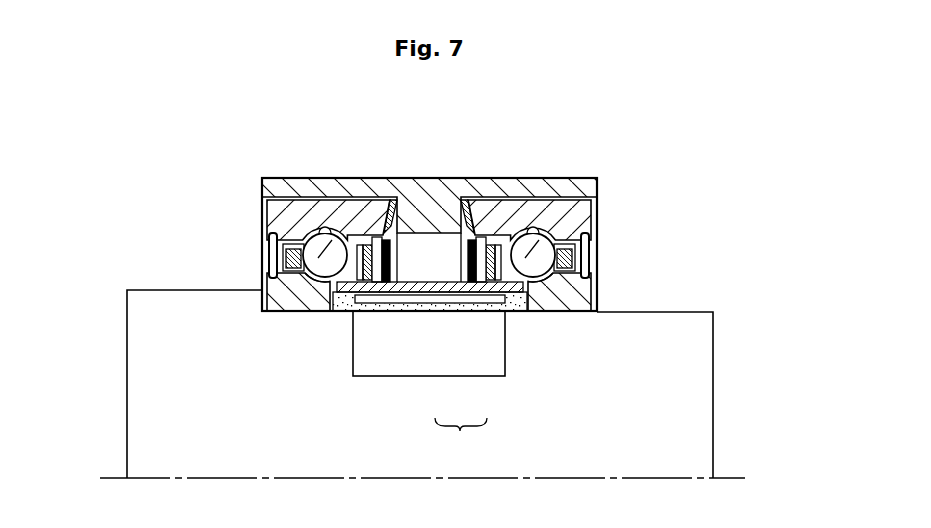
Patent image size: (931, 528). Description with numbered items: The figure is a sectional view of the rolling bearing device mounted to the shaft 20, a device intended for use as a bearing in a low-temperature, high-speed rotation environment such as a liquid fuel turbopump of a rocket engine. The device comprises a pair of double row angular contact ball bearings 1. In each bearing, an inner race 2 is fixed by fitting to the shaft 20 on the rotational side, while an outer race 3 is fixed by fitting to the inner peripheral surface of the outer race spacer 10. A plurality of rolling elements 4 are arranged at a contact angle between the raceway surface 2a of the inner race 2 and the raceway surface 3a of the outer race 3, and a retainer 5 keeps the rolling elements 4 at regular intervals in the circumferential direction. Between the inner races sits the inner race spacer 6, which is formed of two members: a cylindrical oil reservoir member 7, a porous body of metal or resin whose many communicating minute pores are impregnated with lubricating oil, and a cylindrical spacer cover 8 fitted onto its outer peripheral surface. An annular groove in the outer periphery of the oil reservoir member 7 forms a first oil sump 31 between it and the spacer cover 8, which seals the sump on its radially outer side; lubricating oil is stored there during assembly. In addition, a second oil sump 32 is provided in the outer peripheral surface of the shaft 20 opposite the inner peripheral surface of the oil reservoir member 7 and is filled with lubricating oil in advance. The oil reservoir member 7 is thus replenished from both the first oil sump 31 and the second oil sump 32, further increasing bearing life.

The angular contact ball bearing 1 is at (254, 211).
The inner race 2 is at (279, 290).
The raceway surface of the inner race 2a is at (312, 276).
The outer race 3 is at (363, 215).
The raceway surface of the outer race 3a is at (337, 232).
The rolling element 4 is at (303, 247).
The retainer 5 is at (270, 250).
The inner race spacer 6 is at (461, 434).
The oil reservoir member 7 is at (443, 308).
The spacer cover 8 is at (473, 287).
The outer race spacer 10 is at (422, 188).
The shaft 20 is at (695, 396).
The first oil sump 31 is at (375, 296).
The second oil sump 32 is at (405, 360).